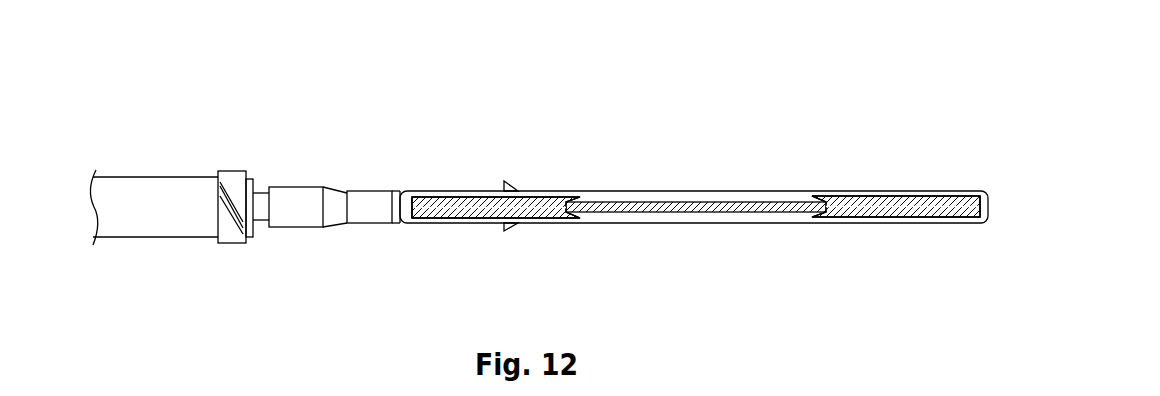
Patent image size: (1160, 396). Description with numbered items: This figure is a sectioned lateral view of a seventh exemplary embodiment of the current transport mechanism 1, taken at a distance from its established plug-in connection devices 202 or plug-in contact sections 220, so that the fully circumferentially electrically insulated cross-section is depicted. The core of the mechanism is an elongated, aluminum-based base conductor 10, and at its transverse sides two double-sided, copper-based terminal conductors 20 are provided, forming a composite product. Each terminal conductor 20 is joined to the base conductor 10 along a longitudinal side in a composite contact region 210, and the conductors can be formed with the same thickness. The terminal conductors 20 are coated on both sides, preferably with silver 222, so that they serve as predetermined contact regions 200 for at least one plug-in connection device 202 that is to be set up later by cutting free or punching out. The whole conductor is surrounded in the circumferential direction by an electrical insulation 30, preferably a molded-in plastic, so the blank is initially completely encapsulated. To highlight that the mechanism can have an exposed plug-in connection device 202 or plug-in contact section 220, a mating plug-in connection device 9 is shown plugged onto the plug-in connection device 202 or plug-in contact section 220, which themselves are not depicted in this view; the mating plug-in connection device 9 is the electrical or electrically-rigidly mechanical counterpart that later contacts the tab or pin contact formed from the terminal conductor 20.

The current transport mechanism 1 is at (542, 179).
The mating plug-in connection device 9 is at (332, 191).
The base conductor 10 is at (721, 203).
The terminal conductor 20 is at (688, 204).
The predetermined contact region 200 is at (688, 149).
The plug-in connection device 202 is at (488, 149).
The plug-in contact section 220 is at (475, 175).
The composite contact region 210 is at (812, 200).
The silver coating 222 is at (543, 197).
The electrical insulation 30 is at (765, 224).